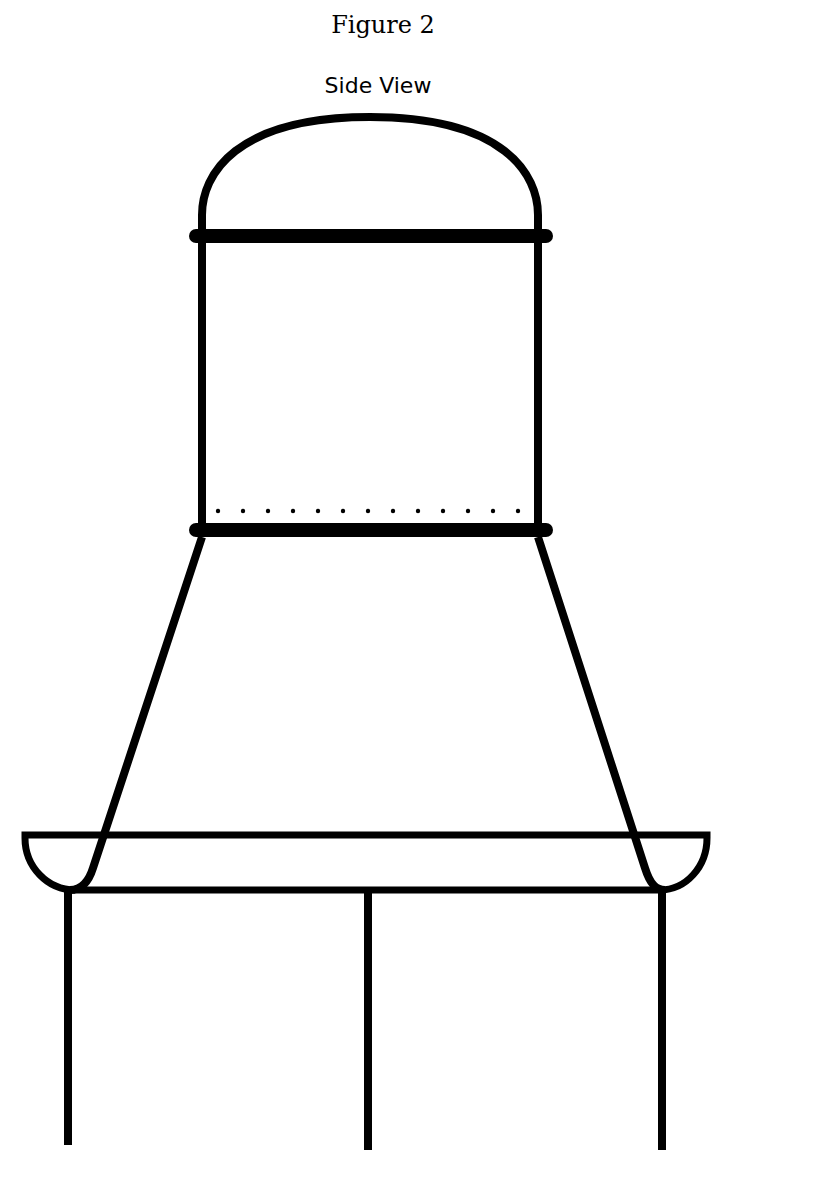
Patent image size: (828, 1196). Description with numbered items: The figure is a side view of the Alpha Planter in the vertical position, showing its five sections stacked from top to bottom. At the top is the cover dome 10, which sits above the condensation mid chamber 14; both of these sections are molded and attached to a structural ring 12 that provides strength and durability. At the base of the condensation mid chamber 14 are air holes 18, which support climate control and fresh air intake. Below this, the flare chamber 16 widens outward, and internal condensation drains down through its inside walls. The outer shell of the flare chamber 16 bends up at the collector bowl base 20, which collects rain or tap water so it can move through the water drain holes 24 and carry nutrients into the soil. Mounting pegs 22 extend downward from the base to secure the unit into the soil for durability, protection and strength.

The cover dome 10 is at (503, 192).
The structural ring 12 is at (550, 240).
The condensation mid chamber 14 is at (510, 368).
The flare chamber 16 is at (185, 701).
The air holes 18 is at (520, 510).
The collector bowl base 20 is at (668, 852).
The mounting pegs 22 is at (372, 1017).
The water drain holes 24 is at (222, 893).